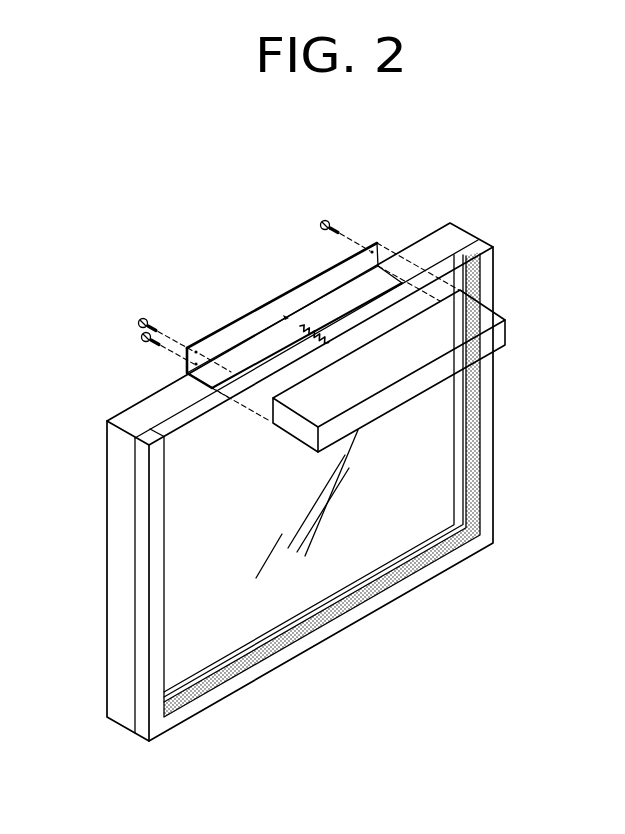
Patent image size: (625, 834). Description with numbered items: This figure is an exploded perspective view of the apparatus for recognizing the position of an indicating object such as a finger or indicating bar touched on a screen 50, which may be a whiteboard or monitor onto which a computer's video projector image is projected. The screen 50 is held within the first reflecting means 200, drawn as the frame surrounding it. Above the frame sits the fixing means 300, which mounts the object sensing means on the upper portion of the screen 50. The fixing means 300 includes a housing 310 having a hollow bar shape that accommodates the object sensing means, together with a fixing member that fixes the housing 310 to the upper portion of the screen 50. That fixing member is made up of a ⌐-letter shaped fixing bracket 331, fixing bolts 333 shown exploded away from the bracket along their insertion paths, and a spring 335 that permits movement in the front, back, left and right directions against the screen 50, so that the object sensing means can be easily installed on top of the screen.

The first reflecting means 200 is at (341, 638).
The screen 50 is at (432, 432).
The fixing means 300 is at (216, 242).
The housing 310 is at (488, 318).
The fixing bracket 331 is at (230, 340).
The fixing bolt 333 is at (335, 220).
The spring 335 is at (311, 326).